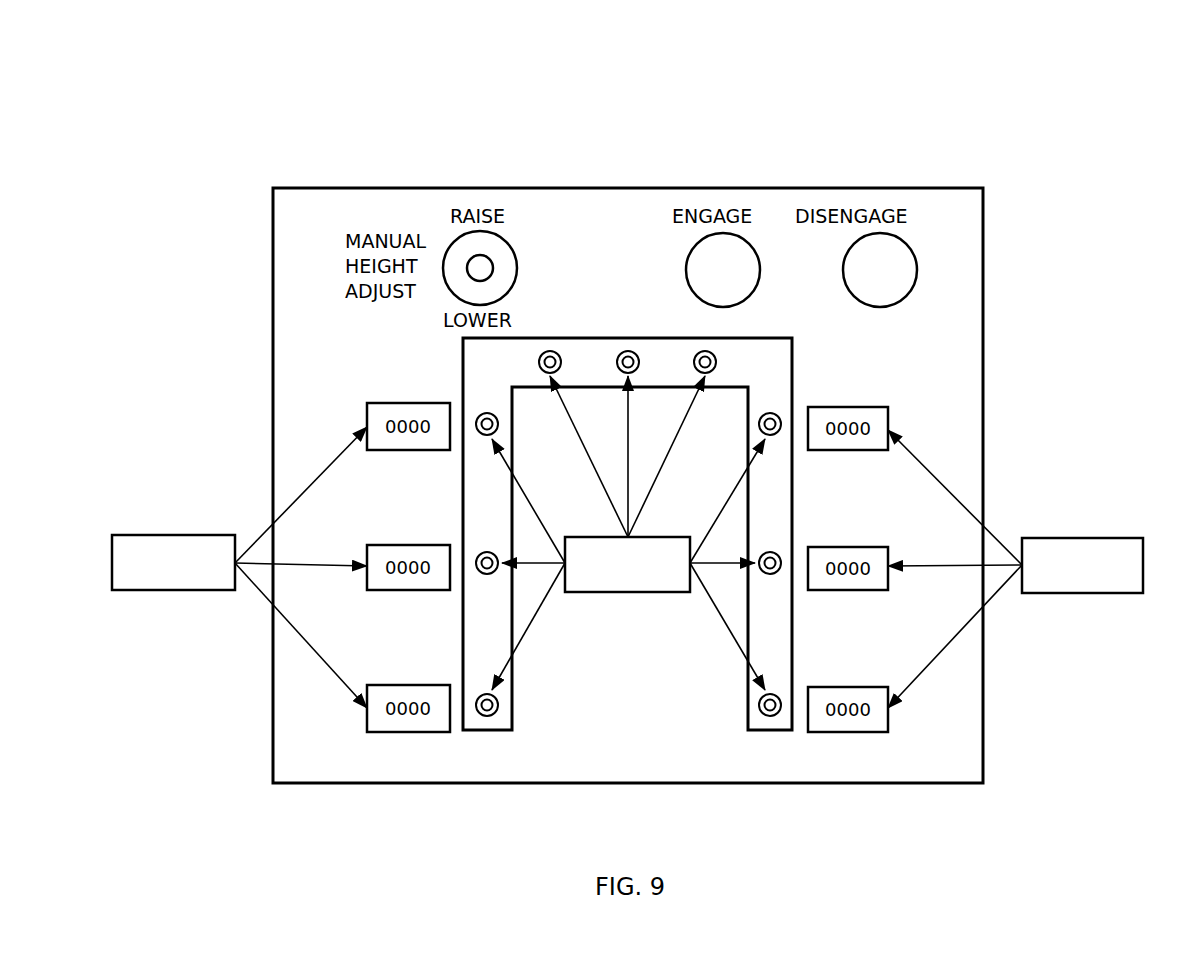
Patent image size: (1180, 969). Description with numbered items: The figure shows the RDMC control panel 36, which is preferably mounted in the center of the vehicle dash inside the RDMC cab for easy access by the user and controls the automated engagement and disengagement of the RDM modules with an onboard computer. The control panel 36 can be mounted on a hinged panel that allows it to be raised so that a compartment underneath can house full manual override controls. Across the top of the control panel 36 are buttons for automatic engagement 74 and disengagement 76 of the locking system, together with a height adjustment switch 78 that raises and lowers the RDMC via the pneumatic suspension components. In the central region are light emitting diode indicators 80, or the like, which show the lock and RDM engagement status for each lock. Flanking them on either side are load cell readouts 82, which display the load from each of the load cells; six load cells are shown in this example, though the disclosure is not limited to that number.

The control panel 36 is at (662, 135).
The automatic engagement button 74 is at (755, 242).
The automatic disengagement button 76 is at (908, 245).
The height adjustment switch 78 is at (513, 247).
The light emitting diode (LED) indicators 80 is at (642, 597).
The load cell readouts 82 is at (173, 535).